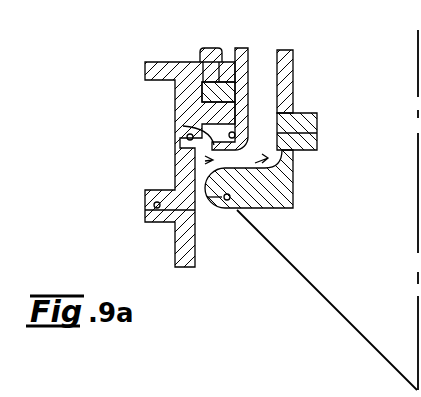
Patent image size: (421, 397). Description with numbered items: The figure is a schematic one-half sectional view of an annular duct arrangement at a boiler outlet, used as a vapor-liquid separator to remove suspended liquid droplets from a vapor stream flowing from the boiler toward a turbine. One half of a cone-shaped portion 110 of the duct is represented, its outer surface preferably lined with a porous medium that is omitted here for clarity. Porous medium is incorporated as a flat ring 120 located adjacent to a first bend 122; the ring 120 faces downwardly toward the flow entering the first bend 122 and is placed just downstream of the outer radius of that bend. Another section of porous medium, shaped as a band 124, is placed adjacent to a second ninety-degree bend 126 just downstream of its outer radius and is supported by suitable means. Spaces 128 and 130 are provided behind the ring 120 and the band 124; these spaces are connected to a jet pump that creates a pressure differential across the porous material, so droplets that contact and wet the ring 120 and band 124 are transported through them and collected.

The cone-shaped portion 110 is at (302, 280).
The flat ring 120 is at (217, 130).
The first bend 122 is at (205, 161).
The band 124 is at (297, 150).
The second 90° bend 126 is at (294, 190).
The space 128 is at (235, 125).
The space 130 is at (290, 130).